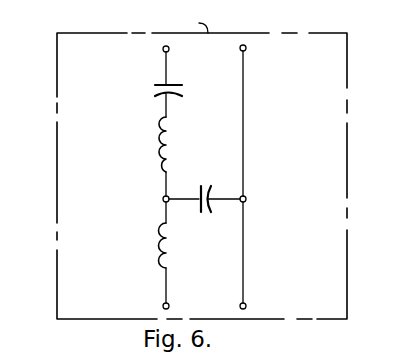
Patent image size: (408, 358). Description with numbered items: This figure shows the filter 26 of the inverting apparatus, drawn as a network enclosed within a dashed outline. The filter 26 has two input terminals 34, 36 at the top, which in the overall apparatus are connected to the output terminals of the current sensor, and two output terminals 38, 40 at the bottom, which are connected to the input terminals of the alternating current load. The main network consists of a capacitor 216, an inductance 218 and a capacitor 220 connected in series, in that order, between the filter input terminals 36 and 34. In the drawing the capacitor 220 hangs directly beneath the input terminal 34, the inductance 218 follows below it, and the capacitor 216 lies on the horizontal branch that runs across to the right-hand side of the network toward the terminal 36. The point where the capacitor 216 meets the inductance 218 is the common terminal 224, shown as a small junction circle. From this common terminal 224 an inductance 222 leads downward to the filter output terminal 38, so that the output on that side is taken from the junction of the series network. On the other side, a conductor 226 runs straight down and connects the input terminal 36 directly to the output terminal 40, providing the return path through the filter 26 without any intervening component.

The filter 26 is at (57, 52).
The input terminal 34 is at (162, 50).
The input terminal 36 is at (246, 48).
The output terminal 38 is at (163, 305).
The output terminal 40 is at (246, 305).
The capacitor 216 is at (209, 186).
The inductance 218 is at (167, 141).
The capacitor 220 is at (155, 87).
The inductance 222 is at (170, 249).
The common terminal 224 is at (162, 201).
The conductor 226 is at (245, 185).